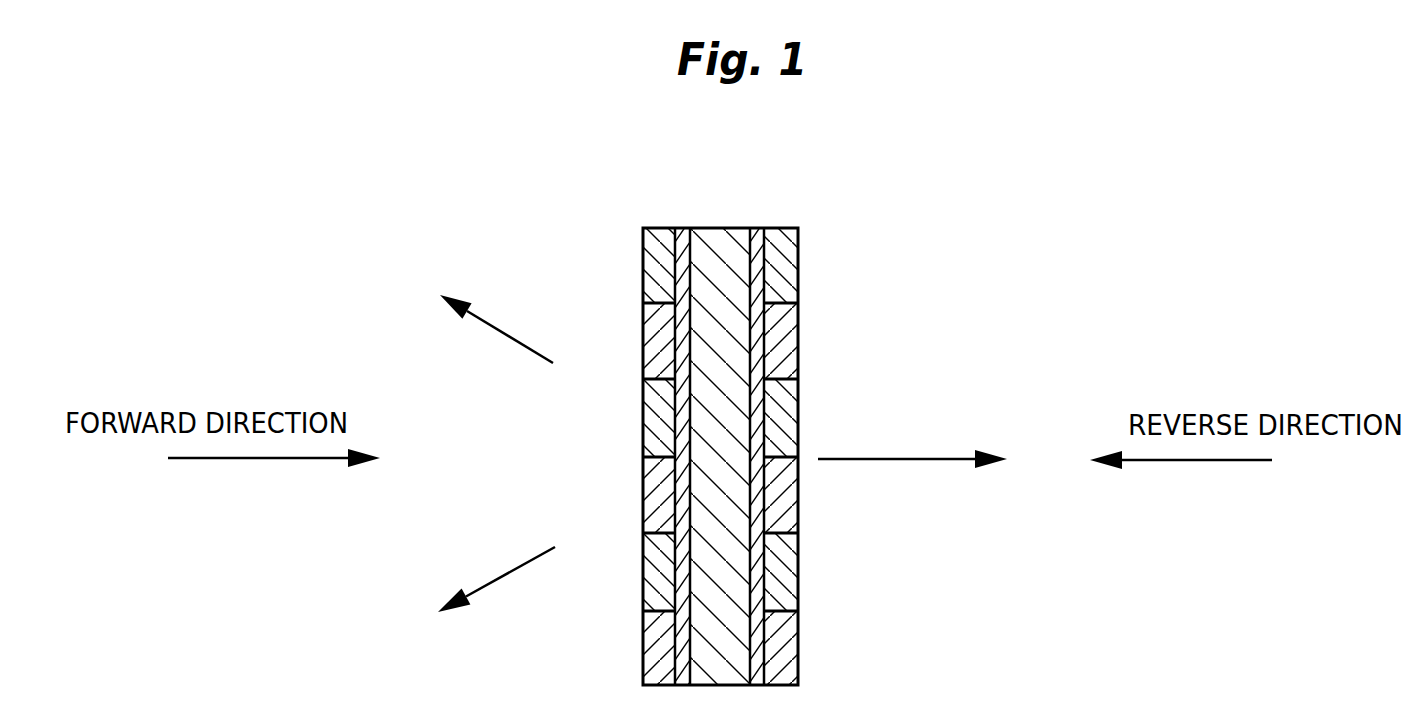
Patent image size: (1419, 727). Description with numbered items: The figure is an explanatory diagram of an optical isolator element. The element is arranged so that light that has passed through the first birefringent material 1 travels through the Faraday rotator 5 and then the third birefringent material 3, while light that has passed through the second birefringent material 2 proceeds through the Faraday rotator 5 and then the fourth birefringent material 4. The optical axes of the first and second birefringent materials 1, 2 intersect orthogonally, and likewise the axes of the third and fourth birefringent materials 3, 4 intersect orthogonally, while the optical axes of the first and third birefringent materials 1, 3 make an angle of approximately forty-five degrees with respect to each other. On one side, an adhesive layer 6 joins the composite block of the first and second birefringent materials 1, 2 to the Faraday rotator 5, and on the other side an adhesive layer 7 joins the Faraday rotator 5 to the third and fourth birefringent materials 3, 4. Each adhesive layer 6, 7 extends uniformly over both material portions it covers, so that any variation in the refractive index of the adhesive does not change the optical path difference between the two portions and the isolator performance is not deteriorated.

The first birefringent material 1 is at (658, 262).
The second birefringent material 2 is at (657, 349).
The third birefringent material 3 is at (788, 265).
The fourth birefringent material 4 is at (788, 347).
The Faraday rotator 5 is at (724, 230).
The adhesive layer 6 is at (683, 230).
The adhesive layer 7 is at (760, 232).